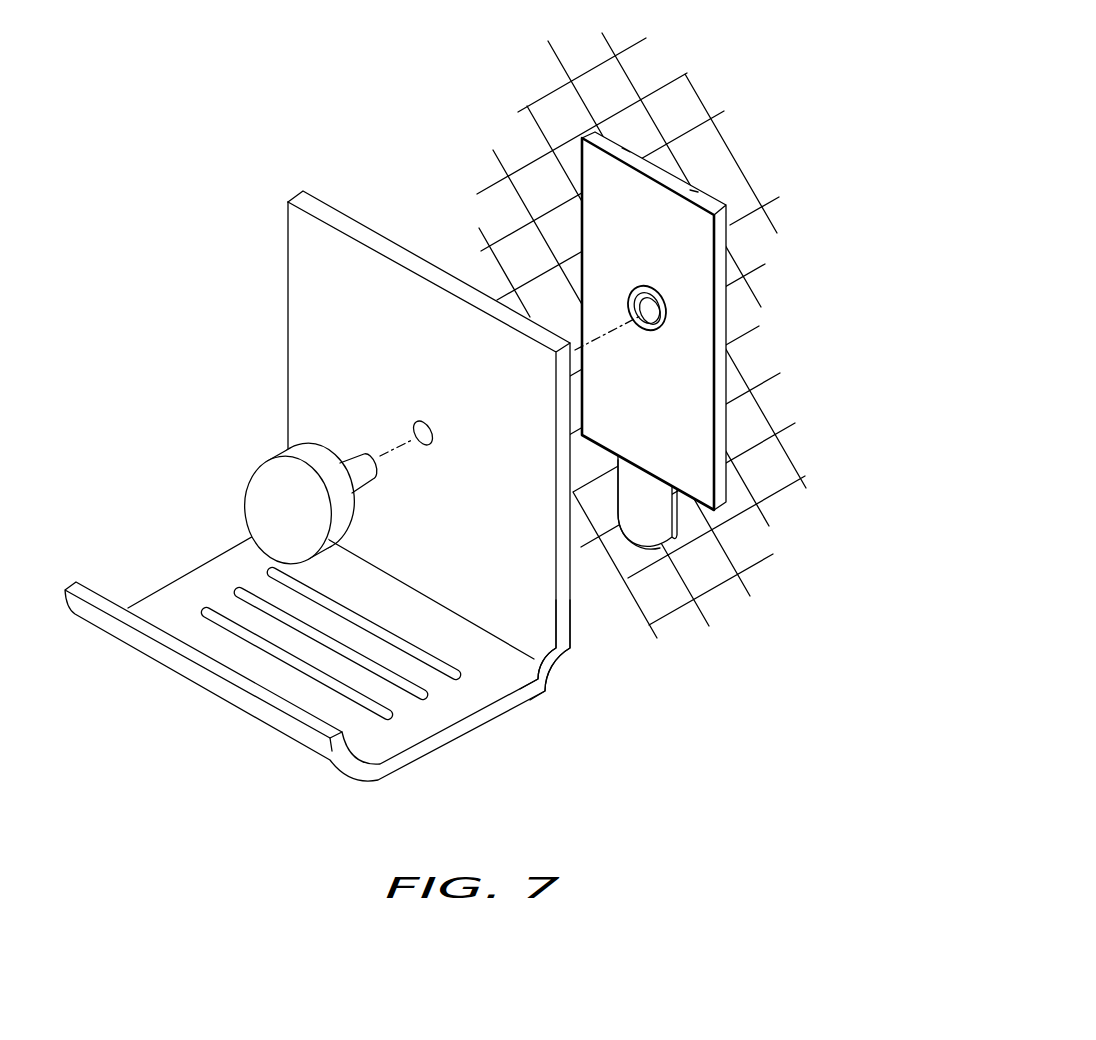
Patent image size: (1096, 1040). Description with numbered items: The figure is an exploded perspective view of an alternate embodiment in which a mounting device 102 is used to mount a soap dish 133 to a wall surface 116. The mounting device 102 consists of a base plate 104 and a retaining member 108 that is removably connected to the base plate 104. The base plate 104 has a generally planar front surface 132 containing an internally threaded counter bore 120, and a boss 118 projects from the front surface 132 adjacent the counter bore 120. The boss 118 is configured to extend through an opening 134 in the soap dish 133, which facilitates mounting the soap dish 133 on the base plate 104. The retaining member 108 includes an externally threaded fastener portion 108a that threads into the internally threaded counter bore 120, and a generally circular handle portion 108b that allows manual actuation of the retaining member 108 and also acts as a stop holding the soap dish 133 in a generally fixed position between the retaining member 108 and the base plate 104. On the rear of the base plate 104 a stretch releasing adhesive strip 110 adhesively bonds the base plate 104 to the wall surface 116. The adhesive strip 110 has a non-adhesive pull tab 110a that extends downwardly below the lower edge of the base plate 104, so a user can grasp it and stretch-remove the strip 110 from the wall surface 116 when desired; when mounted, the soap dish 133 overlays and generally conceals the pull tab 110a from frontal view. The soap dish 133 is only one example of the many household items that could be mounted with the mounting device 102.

The mounting device 102 is at (324, 433).
The base plate 104 is at (666, 294).
The retaining member 108 is at (263, 470).
The externally threaded fastener portion 108a is at (356, 465).
The generally circular handle portion 108b is at (277, 515).
The stretch releasing adhesive strip 110 is at (722, 570).
The non-adhesive pull tab 110a is at (643, 507).
The wall surface 116 is at (685, 100).
The boss 118 is at (667, 312).
The internally threaded counter bore 120 is at (650, 330).
The front surface 132 is at (703, 448).
The soap dish 133 is at (490, 677).
The opening 134 is at (427, 447).